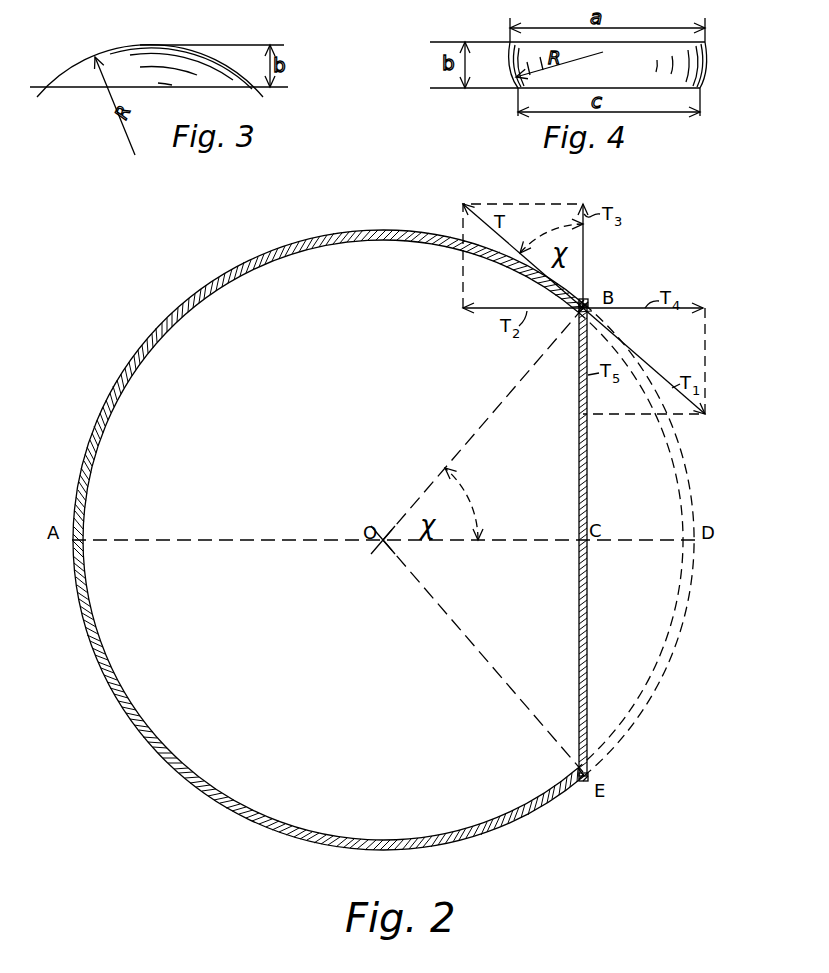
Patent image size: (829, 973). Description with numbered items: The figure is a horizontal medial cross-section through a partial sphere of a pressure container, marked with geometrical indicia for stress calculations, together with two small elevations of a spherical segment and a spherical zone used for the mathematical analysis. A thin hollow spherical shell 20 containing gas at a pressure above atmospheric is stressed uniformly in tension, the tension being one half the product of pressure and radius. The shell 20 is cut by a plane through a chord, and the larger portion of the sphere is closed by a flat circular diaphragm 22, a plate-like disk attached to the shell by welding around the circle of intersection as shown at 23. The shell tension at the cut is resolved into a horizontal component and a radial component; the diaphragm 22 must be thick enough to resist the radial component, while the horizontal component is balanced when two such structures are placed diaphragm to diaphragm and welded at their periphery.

The spherical shell 20 is at (346, 236).
The flat circular diaphragm 22 is at (588, 607).
The welded circle of intersection 23 is at (577, 313).